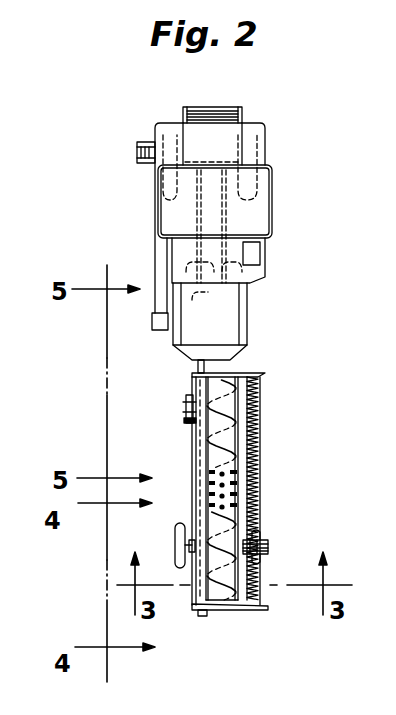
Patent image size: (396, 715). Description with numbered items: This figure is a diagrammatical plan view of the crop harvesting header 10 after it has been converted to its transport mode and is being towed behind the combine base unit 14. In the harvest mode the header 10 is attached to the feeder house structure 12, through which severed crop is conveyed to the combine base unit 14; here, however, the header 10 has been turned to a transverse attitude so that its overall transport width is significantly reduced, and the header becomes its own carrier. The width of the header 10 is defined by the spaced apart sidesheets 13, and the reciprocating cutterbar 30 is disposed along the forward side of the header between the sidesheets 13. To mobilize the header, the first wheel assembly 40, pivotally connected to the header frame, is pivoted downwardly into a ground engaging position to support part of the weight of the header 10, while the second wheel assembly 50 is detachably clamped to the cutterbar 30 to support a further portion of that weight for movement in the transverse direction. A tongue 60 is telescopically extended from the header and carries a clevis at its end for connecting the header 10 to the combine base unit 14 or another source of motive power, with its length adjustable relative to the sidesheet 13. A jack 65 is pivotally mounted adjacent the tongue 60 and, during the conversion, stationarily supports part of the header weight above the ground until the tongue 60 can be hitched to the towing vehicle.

The crop harvesting header 10 is at (255, 609).
The feeder house structure 12 is at (242, 115).
The sidesheets 13 is at (245, 375).
The combine base unit 14 is at (272, 205).
The reciprocating cutterbar 30 is at (258, 452).
The first wheel assembly 40 is at (176, 540).
The second wheel assembly 50 is at (262, 545).
The tongue 60 is at (198, 368).
The jack 65 is at (185, 421).